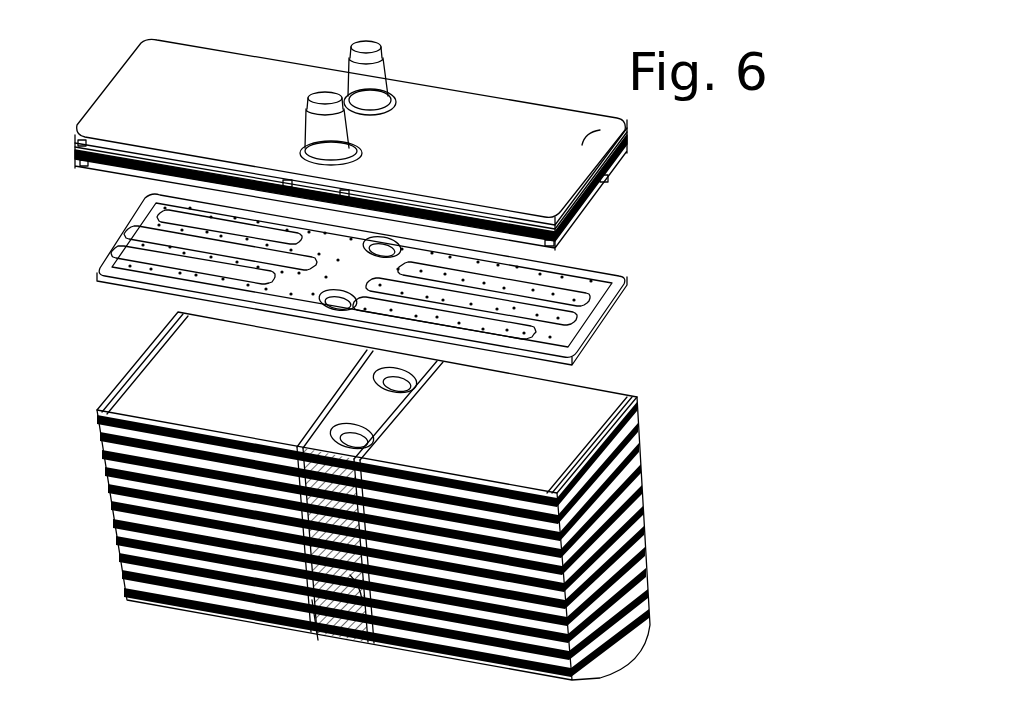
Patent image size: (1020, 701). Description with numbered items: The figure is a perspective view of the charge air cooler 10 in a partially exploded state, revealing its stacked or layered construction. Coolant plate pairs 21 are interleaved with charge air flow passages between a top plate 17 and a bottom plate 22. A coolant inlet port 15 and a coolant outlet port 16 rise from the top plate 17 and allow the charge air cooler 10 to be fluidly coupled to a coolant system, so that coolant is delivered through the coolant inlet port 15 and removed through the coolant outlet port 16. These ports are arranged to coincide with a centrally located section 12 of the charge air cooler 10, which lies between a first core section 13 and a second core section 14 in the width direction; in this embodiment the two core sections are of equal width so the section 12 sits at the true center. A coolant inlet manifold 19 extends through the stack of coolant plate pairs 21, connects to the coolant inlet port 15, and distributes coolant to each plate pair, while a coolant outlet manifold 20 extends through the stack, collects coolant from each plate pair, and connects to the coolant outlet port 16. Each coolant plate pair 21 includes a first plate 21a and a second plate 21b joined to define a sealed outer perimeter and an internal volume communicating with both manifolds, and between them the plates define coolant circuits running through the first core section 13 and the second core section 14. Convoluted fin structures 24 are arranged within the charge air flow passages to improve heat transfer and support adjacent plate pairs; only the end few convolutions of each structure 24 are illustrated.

The charge air cooler 10 is at (543, 86).
The centrally located section 12 is at (345, 600).
The first core section 13 is at (170, 552).
The second core section 14 is at (463, 635).
The coolant inlet port 15 is at (310, 89).
The coolant outlet port 16 is at (387, 44).
The top plate 17 is at (615, 128).
The coolant inlet manifold 19 is at (342, 437).
The coolant outlet manifold 20 is at (420, 368).
The coolant plate pair 21 is at (375, 279).
The first plate 21a is at (122, 257).
The second plate 21b is at (108, 293).
The bottom plate 22 is at (359, 513).
The convoluted fin structure 24 is at (85, 165).